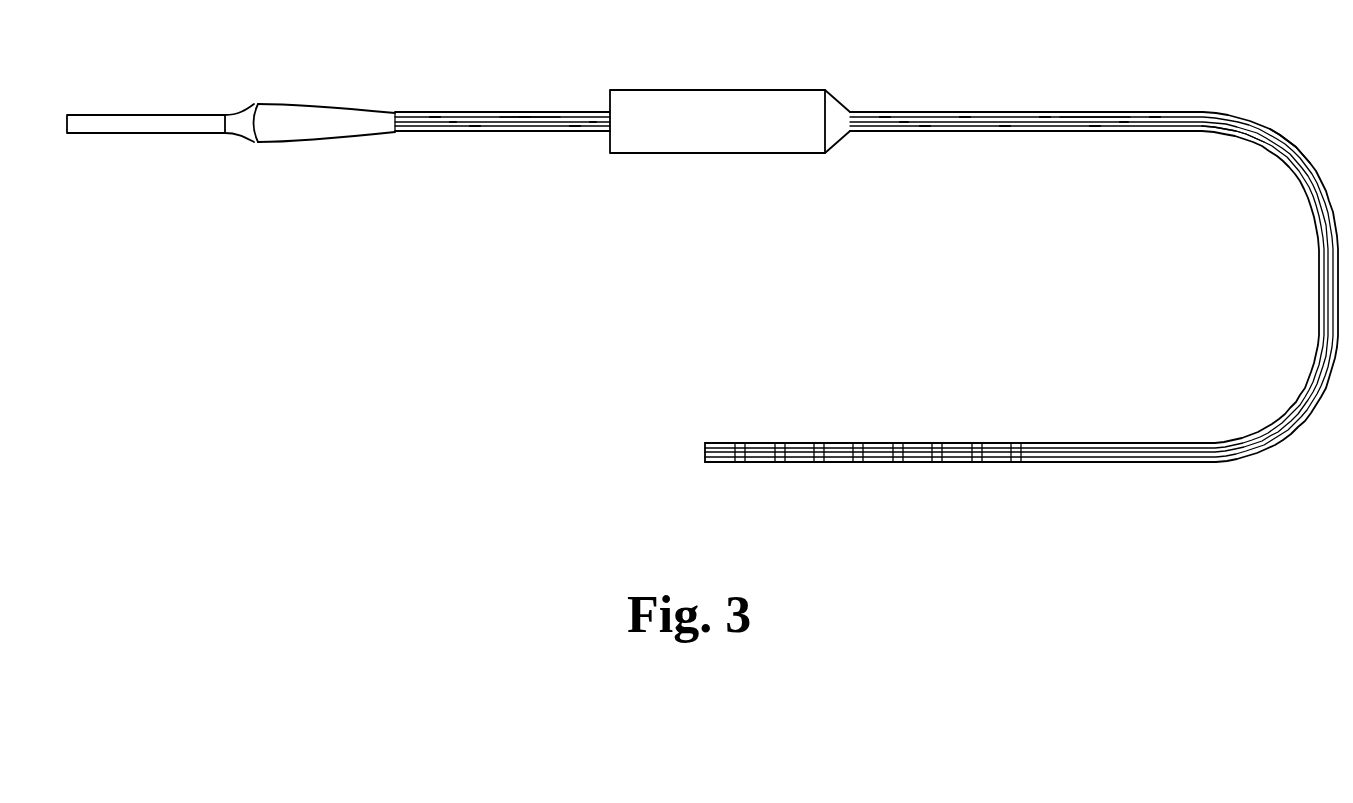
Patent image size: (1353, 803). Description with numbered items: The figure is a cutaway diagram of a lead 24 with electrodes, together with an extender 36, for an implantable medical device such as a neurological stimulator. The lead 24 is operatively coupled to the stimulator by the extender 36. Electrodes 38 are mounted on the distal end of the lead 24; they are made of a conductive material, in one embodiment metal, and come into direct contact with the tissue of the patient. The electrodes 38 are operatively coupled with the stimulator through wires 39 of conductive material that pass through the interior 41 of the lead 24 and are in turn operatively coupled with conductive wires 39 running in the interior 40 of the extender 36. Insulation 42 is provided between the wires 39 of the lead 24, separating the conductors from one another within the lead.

The lead 24 is at (1312, 238).
The extender 36 is at (497, 134).
The electrodes 38 is at (1021, 464).
The wires 39 is at (528, 117).
The interior of extender 40 is at (460, 118).
The interior of lead 41 is at (1228, 130).
The insulation 42 is at (1290, 158).